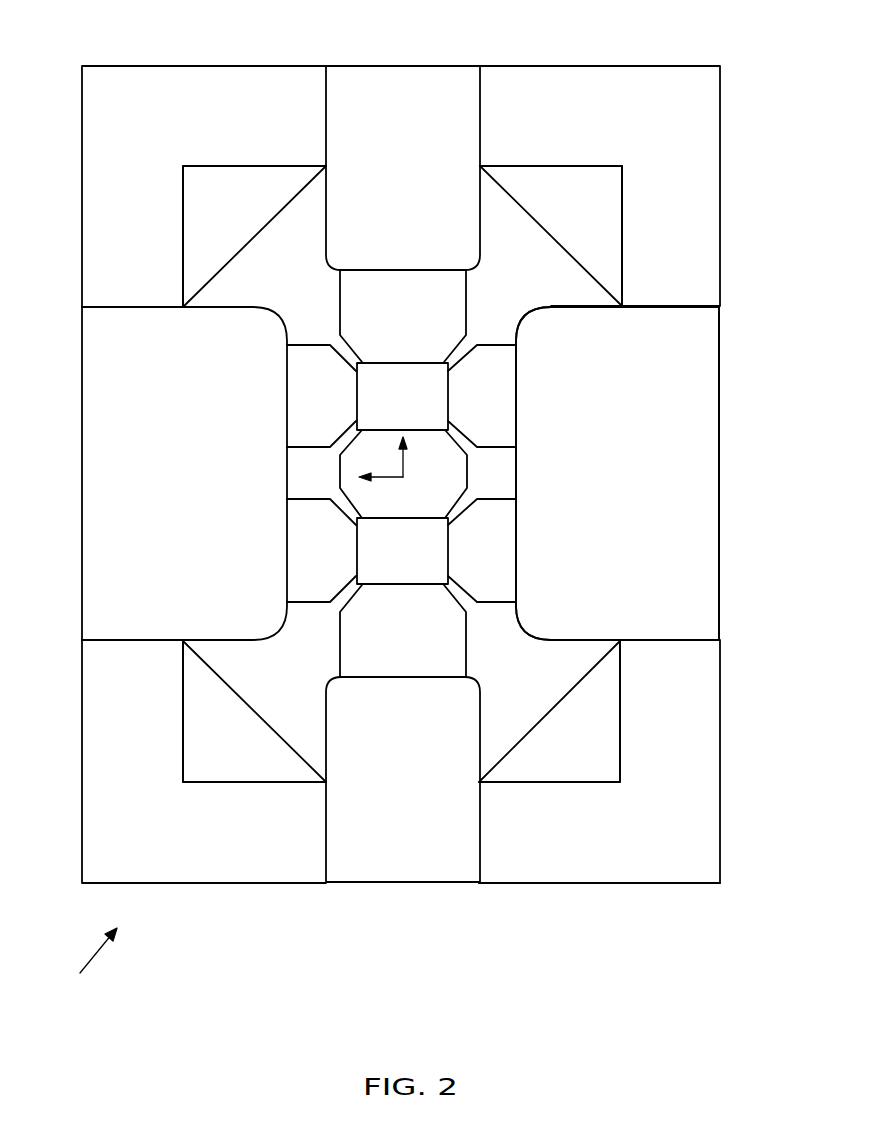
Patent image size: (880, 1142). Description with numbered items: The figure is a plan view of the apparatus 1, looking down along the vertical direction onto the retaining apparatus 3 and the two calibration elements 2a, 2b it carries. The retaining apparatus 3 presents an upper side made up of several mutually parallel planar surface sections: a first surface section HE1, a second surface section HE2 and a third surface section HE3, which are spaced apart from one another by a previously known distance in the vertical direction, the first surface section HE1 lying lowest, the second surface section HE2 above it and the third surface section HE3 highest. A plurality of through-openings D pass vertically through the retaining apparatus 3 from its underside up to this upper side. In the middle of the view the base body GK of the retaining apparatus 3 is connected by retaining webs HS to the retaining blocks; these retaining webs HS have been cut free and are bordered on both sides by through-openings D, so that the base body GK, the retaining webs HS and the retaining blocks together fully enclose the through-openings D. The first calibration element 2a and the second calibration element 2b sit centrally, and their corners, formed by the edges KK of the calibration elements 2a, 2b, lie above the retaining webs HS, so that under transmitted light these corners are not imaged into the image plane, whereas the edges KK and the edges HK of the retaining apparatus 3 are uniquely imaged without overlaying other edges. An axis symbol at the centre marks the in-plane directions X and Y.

The third surface section HE3 is at (100, 78).
The first surface section HE1 is at (395, 78).
The second surface section HE2 is at (318, 188).
The base body GK is at (702, 563).
The through-opening D is at (200, 183).
The edge of the retaining apparatus HK is at (228, 165).
The retaining web HS is at (347, 352).
The edge of the calibration element KK is at (403, 362).
The first calibration element 2a is at (434, 555).
The second calibration element 2b is at (432, 397).
The apparatus 1 is at (91, 956).
The retaining apparatus 3 is at (633, 884).
The X axis X is at (413, 453).
The Y axis Y is at (387, 479).